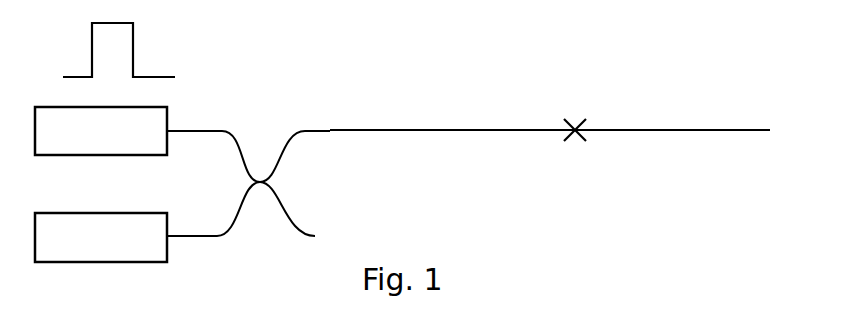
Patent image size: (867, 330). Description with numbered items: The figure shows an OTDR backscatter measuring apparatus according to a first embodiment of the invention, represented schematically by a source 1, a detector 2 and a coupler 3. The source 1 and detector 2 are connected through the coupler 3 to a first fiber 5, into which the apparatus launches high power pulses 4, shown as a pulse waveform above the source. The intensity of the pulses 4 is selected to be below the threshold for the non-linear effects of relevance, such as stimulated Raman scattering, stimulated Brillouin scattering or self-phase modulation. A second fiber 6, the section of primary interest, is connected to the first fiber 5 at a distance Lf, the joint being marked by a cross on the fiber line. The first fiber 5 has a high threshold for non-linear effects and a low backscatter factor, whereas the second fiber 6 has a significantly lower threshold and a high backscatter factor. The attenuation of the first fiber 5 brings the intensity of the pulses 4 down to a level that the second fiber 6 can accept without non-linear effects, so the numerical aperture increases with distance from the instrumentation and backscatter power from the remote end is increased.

The source 1 is at (108, 144).
The detector 2 is at (109, 250).
The coupler 3 is at (290, 157).
The pulses 4 is at (118, 63).
The first fiber 5 is at (433, 130).
The second fiber 6 is at (708, 130).